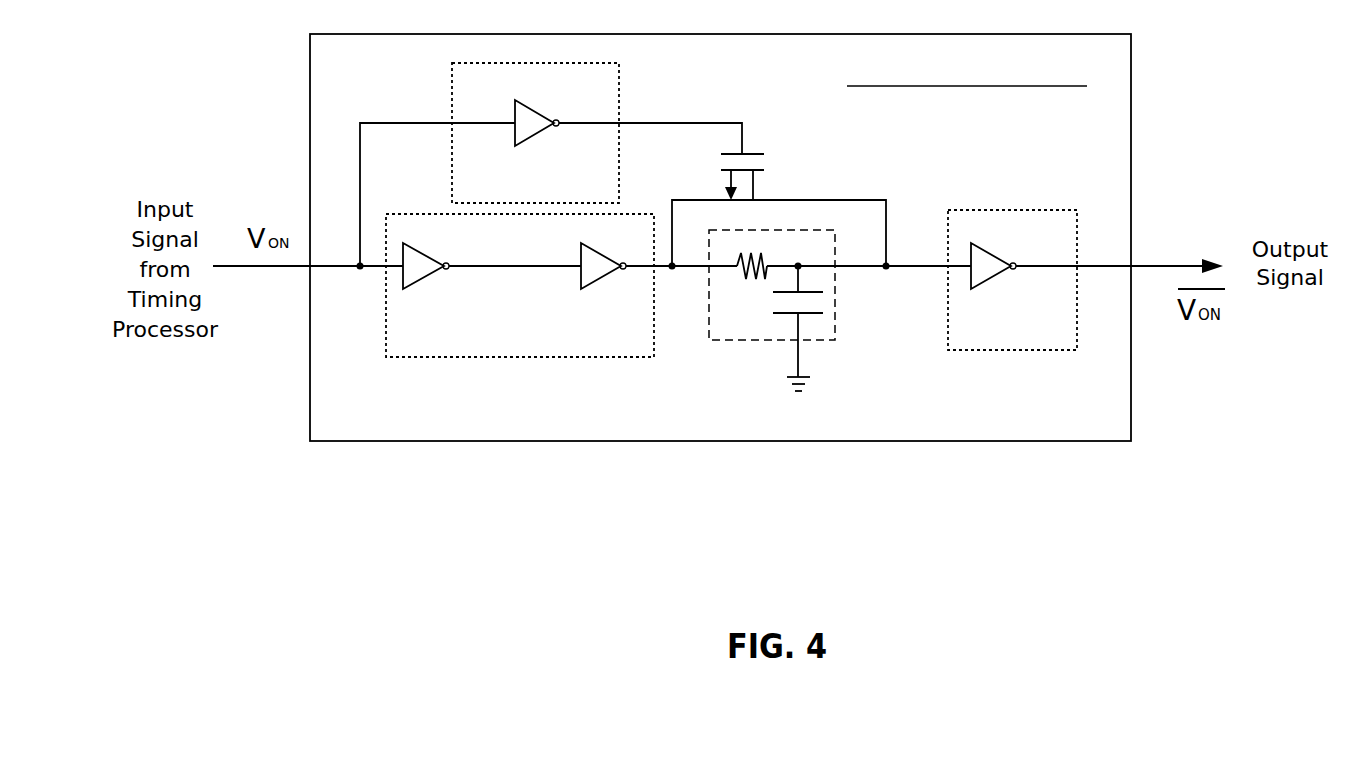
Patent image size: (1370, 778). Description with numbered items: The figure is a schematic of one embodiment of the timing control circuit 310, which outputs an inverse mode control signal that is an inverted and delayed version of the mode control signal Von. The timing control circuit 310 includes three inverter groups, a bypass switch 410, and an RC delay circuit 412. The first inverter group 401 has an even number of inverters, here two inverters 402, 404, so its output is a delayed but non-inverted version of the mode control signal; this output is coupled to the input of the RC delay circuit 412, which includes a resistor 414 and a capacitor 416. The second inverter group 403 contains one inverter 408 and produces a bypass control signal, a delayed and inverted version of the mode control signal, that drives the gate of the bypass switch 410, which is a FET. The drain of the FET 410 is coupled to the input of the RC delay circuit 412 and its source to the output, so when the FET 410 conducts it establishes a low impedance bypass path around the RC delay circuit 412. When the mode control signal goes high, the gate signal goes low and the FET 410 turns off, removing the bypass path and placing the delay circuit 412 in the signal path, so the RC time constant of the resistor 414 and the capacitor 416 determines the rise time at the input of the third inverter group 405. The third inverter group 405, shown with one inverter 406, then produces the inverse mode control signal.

The timing control circuit 310 is at (1113, 117).
The first inverter group 401 is at (518, 352).
The inverter 402 is at (415, 275).
The inverter 404 is at (597, 278).
The second inverter group 403 is at (598, 95).
The inverter 408 is at (527, 130).
The bypass switch 410 is at (770, 162).
The RC delay circuit 412 is at (722, 327).
The resistor 414 is at (747, 287).
The capacitor 416 is at (823, 300).
The third inverter group 405 is at (1035, 218).
The inverter 406 is at (987, 277).